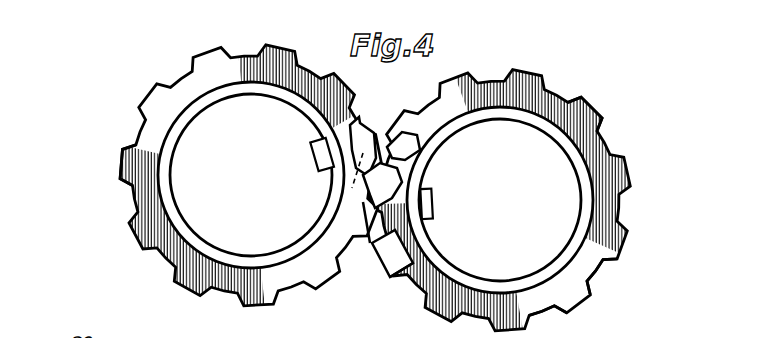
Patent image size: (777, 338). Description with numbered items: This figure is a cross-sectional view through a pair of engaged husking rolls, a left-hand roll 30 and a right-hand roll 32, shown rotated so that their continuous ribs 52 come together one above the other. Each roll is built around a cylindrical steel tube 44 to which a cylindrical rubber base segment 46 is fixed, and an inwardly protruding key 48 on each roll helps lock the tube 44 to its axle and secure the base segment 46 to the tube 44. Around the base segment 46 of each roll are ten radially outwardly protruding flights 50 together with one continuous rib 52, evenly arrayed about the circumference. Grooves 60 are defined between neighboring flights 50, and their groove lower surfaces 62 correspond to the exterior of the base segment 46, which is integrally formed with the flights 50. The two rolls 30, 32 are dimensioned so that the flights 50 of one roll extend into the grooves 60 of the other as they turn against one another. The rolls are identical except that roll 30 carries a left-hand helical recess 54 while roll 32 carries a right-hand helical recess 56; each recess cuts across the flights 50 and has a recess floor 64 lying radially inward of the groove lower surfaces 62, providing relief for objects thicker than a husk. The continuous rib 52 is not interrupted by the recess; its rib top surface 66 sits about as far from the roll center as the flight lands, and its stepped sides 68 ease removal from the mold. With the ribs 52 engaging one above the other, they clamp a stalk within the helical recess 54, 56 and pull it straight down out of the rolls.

The left-hand roll 30 is at (280, 45).
The right-hand roll 32 is at (535, 70).
The cylindrical steel tube 44 is at (208, 107).
The cylindrical rubber base segment 46 is at (318, 275).
The inwardly protruding keys 48 is at (313, 153).
The flights 50 is at (118, 160).
The continuous rib 52 is at (372, 243).
The left-hand helical recess 54 is at (359, 117).
The right-hand helical recess 56 is at (388, 153).
The grooves 60 is at (548, 313).
The groove lower surfaces 62 is at (598, 277).
The recess floor 64 is at (397, 170).
The rib top surface 66 is at (382, 278).
The stepped sides 68 is at (362, 163).